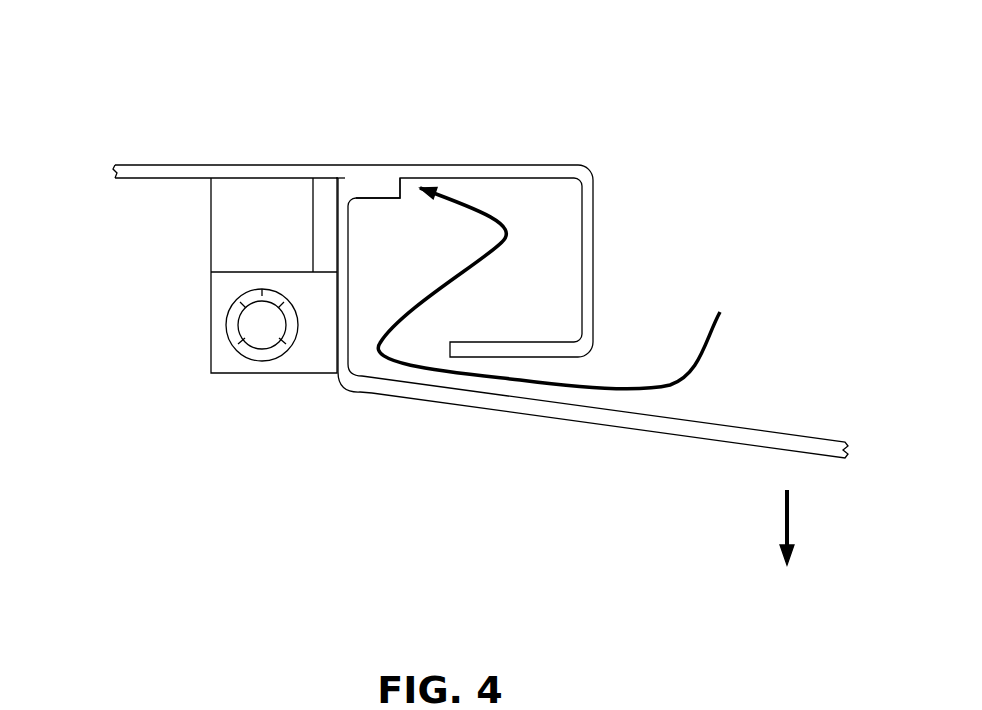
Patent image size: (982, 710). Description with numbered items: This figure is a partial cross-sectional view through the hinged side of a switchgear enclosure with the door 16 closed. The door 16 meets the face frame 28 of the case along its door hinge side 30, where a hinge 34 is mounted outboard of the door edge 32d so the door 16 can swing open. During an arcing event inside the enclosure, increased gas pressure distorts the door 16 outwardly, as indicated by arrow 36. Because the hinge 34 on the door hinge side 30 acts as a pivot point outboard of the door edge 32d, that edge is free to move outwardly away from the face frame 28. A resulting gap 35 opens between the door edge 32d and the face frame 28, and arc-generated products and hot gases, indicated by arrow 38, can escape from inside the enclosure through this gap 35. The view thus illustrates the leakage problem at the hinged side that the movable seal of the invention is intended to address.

The door 16 is at (740, 432).
The face frame 28 is at (348, 173).
The door hinge side 30 is at (192, 297).
The door edge 32d is at (377, 192).
The hinge 34 is at (210, 342).
The gap 35 is at (342, 182).
The arrow 36 is at (790, 508).
The arrow 38 is at (713, 350).